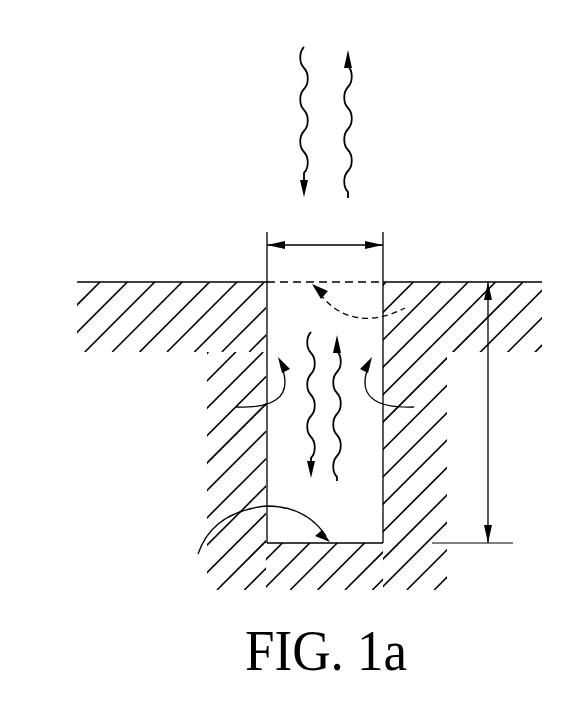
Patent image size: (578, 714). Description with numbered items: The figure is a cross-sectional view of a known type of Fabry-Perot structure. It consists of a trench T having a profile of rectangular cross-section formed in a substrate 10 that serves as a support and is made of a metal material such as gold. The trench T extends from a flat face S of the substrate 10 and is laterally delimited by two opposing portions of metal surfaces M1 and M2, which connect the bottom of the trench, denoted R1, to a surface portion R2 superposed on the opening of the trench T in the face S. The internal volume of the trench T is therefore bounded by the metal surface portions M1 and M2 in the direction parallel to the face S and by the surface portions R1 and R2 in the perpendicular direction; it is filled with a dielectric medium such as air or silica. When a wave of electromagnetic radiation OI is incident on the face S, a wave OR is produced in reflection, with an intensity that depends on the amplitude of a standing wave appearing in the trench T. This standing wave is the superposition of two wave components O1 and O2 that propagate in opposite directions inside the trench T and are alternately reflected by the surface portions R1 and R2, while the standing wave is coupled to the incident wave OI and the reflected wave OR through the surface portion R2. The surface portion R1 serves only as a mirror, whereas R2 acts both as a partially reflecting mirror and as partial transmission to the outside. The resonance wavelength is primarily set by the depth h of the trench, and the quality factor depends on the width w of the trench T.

The substrate 10 is at (118, 551).
The flat face of the substrate S is at (136, 268).
The trench T is at (370, 524).
The width of the trench w is at (325, 228).
The depth of the trench h is at (476, 412).
The incident wave OI is at (302, 99).
The reflected wave OR is at (350, 100).
The first wave component O1 is at (311, 427).
The second wave component O2 is at (337, 421).
The first portion of metal surface M1 is at (240, 391).
The second portion of metal surface M2 is at (409, 391).
The bottom of the trench R1 is at (256, 550).
The surface portion superposed on the trench opening R2 is at (435, 275).